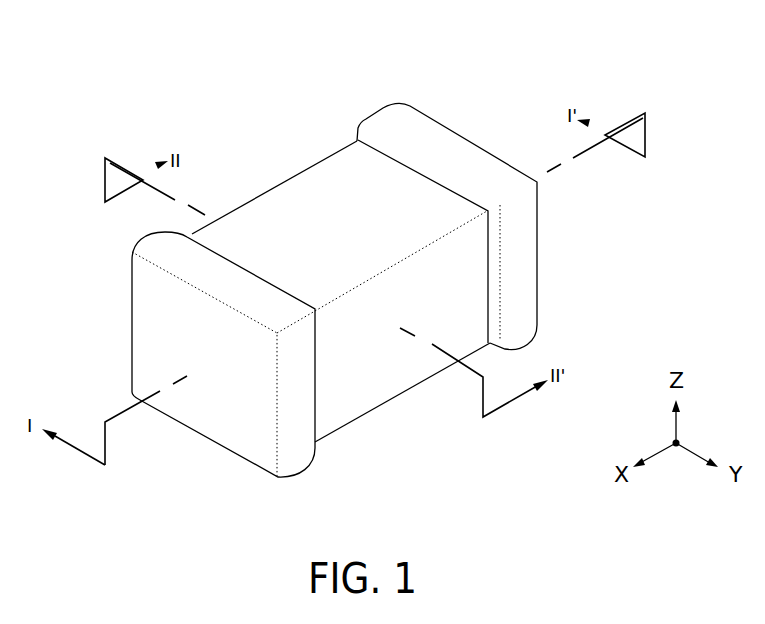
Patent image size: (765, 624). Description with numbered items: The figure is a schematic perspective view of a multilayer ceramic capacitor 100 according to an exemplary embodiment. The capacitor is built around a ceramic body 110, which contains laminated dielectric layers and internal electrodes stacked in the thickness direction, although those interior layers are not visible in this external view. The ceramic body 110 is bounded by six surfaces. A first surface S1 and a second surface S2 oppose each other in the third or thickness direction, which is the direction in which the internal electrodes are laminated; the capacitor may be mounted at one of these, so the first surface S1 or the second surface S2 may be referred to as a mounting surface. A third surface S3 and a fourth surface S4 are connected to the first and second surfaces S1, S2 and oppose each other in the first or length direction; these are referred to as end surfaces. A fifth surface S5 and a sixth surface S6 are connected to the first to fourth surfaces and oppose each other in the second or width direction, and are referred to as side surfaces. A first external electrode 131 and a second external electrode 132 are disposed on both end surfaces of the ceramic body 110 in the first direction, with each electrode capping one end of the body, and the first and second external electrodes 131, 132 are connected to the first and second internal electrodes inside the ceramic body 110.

The multilayer ceramic capacitor 100 is at (202, 34).
The ceramic body 110 is at (303, 187).
The first external electrode 131 is at (158, 325).
The second external electrode 132 is at (389, 120).
The first surface S1 is at (362, 395).
The second surface S2 is at (258, 220).
The third surface S3 is at (220, 420).
The fourth surface S4 is at (460, 260).
The fifth surface S5 is at (200, 298).
The sixth surface S6 is at (460, 298).